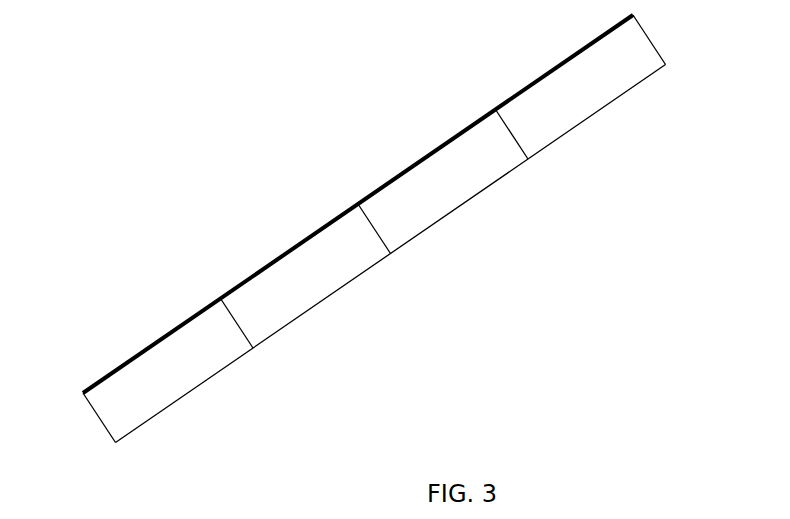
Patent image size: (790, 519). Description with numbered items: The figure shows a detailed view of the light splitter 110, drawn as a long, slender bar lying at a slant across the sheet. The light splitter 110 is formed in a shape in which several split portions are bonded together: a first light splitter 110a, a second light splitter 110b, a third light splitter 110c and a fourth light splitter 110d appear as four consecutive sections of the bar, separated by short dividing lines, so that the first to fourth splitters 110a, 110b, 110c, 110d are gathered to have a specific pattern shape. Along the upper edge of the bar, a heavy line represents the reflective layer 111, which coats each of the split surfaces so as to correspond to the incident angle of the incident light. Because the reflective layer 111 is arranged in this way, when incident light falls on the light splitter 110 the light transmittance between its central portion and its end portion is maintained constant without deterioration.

The light splitter 110 is at (108, 28).
The reflective layer 111 is at (145, 352).
The first light splitter 110a is at (177, 385).
The second light splitter 110b is at (315, 292).
The third light splitter 110c is at (457, 197).
The fourth light splitter 110d is at (595, 102).